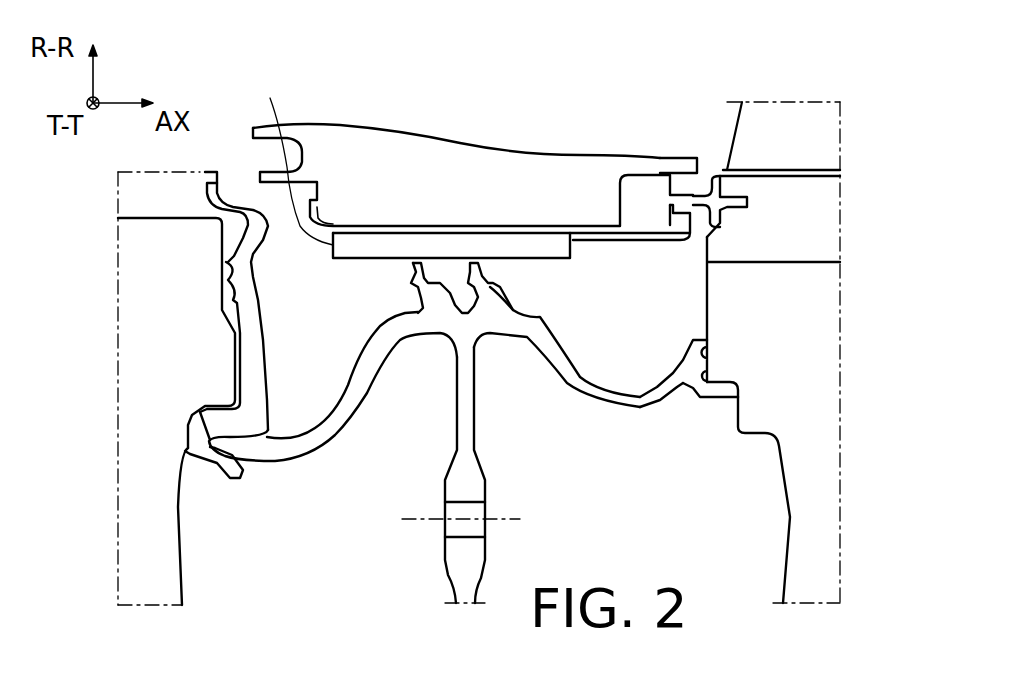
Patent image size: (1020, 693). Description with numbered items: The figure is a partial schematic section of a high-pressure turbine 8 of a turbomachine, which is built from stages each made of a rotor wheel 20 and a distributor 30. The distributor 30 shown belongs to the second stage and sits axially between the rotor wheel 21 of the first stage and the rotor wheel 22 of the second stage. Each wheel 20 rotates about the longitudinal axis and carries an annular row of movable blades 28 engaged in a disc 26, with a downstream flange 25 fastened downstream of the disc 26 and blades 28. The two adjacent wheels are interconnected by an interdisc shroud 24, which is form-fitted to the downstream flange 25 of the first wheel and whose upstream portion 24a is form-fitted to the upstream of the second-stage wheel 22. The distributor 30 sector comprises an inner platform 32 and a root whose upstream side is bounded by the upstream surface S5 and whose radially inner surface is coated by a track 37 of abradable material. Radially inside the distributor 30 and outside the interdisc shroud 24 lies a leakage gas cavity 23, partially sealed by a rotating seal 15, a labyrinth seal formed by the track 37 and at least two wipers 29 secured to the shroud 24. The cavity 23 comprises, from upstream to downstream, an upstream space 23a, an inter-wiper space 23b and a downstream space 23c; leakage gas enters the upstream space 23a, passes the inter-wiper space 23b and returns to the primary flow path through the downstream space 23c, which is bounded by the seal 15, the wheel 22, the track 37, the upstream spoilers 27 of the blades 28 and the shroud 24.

The high-pressure turbine 8 is at (523, 79).
The rotor wheel 20 is at (826, 477).
The rotor wheel of first high-pressure turbine stage 21 is at (113, 283).
The rotor wheel of second high-pressure turbine stage 22 is at (843, 339).
The leakage gas cavity 23 is at (297, 406).
The upstream space 23a is at (282, 332).
The inter-wiper space 23b is at (456, 295).
The downstream space 23c is at (633, 360).
The interdisc shroud 24 is at (684, 383).
The upstream portion of interdisc shroud 24a is at (723, 388).
The downstream flange 25 is at (252, 400).
The disc 26 is at (823, 240).
The upstream spoilers 27 is at (680, 195).
The movable blades 28 is at (138, 192).
The wipers 29 is at (488, 293).
The distributor 30 is at (377, 117).
The inner platform 32 is at (663, 162).
The track made of an abradable material 37 is at (530, 247).
The rotating seal 15 is at (486, 475).
The upstream surface S5 is at (288, 158).